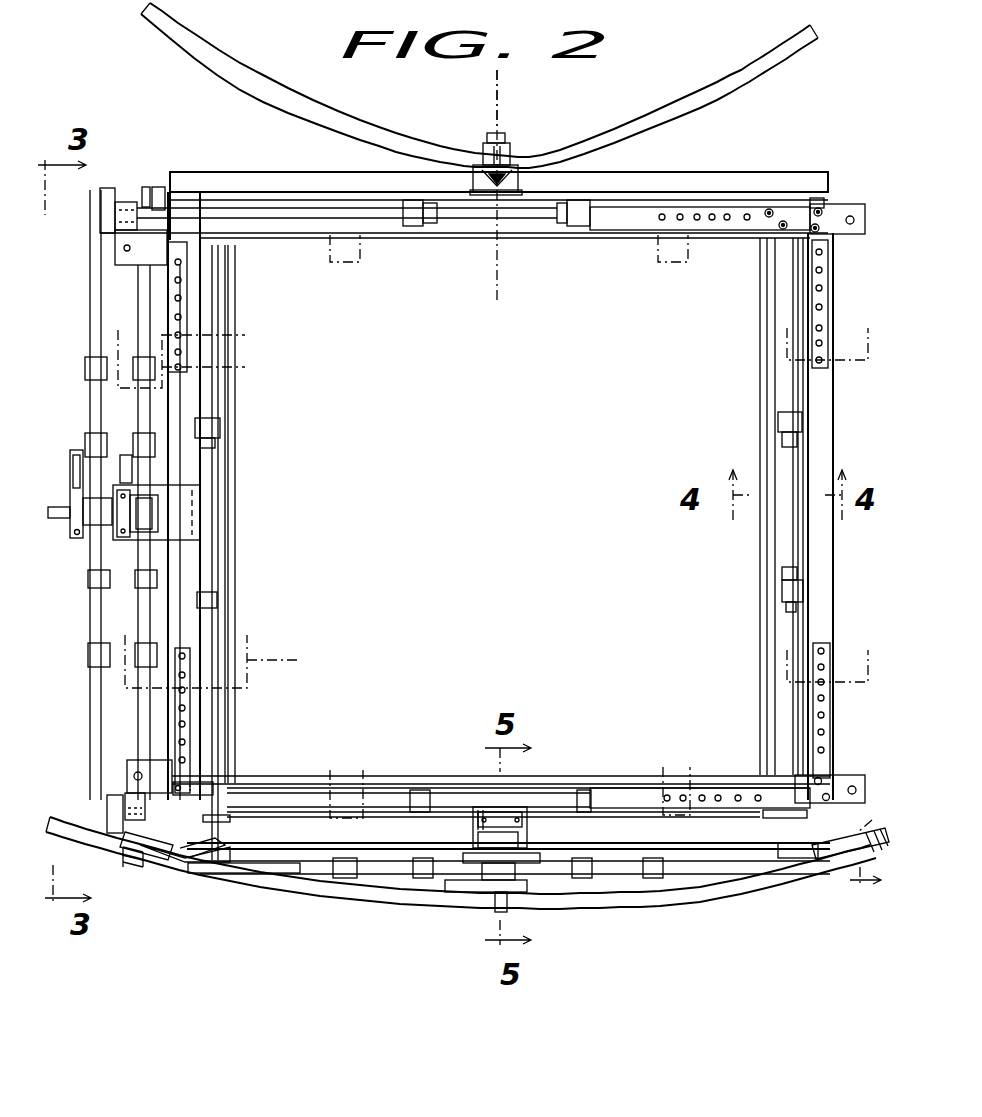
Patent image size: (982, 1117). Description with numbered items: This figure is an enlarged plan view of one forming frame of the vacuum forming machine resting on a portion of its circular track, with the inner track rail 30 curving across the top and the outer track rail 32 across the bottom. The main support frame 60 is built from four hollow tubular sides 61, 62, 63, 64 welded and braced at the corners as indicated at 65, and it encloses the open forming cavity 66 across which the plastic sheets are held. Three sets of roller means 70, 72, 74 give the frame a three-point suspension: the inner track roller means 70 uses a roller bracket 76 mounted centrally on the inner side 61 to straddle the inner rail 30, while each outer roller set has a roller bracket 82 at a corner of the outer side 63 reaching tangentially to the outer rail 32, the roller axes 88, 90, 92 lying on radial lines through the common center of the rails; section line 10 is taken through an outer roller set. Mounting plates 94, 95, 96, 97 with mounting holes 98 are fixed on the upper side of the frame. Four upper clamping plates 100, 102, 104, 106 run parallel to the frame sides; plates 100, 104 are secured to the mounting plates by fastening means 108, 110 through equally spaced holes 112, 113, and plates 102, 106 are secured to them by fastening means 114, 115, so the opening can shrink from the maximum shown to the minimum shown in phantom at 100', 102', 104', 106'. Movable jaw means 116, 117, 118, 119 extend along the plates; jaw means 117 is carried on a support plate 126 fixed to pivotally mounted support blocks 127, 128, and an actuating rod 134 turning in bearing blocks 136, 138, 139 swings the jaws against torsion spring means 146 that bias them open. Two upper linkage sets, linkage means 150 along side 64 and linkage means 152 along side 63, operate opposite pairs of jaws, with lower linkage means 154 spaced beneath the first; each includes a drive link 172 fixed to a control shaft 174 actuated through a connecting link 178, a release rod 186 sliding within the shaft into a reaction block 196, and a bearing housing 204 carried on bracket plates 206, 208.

The section line 10 is at (873, 856).
The inner track rail 30 is at (692, 88).
The outer track rail 32 is at (660, 921).
The main support frame 60 is at (174, 162).
The inner side of support frame 61 is at (695, 183).
The side of support frame 62 is at (822, 417).
The outer side of support frame 63 is at (292, 850).
The side of support frame 64 is at (185, 565).
The corner brace 65 is at (785, 224).
The forming cavity 66 is at (482, 476).
The inner track roller means 70 is at (488, 133).
The outer track roller means 72 is at (157, 880).
The outer track roller means 74 is at (848, 882).
The roller bracket 76 is at (555, 215).
The roller bracket 82 is at (790, 862).
The roller axis 88 is at (506, 100).
The roller axis 90 is at (132, 905).
The roller axis 92 is at (868, 910).
The mounting plate 94 is at (182, 272).
The mounting plate 95 is at (822, 303).
The mounting plate 96 is at (830, 706).
The mounting plate 97 is at (185, 716).
The mounting holes 98 is at (816, 345).
The upper clamping plate 100 is at (700, 247).
The upper clamping plate in minimum-area position 100' is at (300, 339).
The upper clamping plate 102 is at (751, 506).
The upper clamping plate in minimum-area position 102' is at (640, 295).
The upper clamping plate 104 is at (700, 766).
The upper clamping plate in minimum-area position 104' is at (313, 651).
The upper clamping plate 106 is at (260, 552).
The upper clamping plate in minimum-area position 106' is at (392, 278).
The fastening means 108 is at (835, 207).
The fastening means 110 is at (820, 230).
The mounting holes 112 is at (712, 236).
The mounting holes 113 is at (718, 786).
The fastening means 114 is at (768, 210).
The fastening means 115 is at (820, 208).
The movable jaw means 116 is at (473, 240).
The movable jaw means 117 is at (765, 378).
The movable jaw means 118 is at (400, 778).
The movable jaw means 119 is at (228, 430).
The support plate 126 is at (778, 535).
The jaw support block 127 is at (783, 440).
The support block 128 is at (800, 580).
The actuating rod 134 is at (795, 561).
The bearing block 136 is at (780, 421).
The bearing block 138 is at (783, 591).
The bearing block 139 is at (772, 818).
The torsion spring means 146 is at (780, 608).
The linkage means 150 is at (79, 437).
The linkage means 152 is at (427, 891).
The lower linkage means 154 is at (130, 559).
The drive link 172 is at (528, 870).
The control shaft 174 is at (510, 907).
The connecting link 178 is at (470, 893).
The release rod 186 is at (495, 912).
The reaction block 196 is at (478, 810).
The bearing housing 204 is at (478, 842).
The bracket plate 206 is at (530, 784).
The bracket plate 208 is at (528, 816).